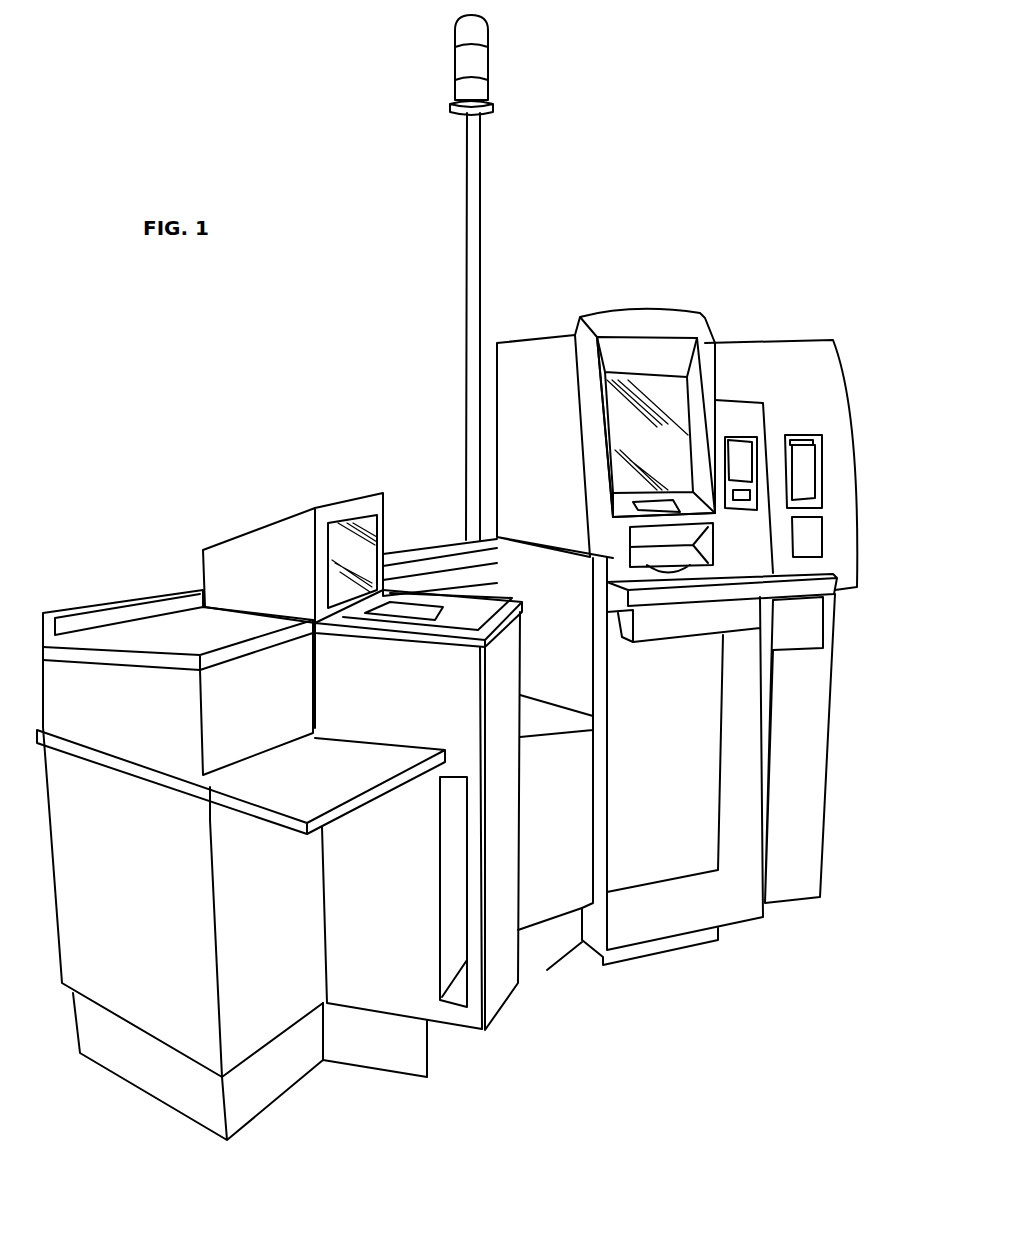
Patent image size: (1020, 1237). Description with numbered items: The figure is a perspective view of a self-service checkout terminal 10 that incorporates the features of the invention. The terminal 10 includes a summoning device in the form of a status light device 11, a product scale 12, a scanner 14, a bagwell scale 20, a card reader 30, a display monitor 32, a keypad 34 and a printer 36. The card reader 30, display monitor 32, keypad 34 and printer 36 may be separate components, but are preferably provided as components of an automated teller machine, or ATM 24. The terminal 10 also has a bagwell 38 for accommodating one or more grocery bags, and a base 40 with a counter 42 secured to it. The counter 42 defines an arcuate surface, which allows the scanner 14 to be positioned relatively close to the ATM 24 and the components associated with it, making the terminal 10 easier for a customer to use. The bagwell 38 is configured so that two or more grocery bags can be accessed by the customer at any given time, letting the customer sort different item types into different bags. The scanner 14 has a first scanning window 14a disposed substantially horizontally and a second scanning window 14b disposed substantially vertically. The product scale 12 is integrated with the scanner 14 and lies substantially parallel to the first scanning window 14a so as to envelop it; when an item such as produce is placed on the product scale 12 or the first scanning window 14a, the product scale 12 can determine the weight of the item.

The self-service checkout terminal 10 is at (730, 148).
The status light device 11 is at (490, 61).
The product scale 12 is at (440, 652).
The scanner 14 is at (336, 495).
The first scanning window 14a is at (410, 608).
The second scanning window 14b is at (337, 583).
The bagwell scale 20 is at (550, 738).
The automated teller machine (ATM) 24 is at (810, 362).
The card reader 30 is at (743, 452).
The display monitor 32 is at (627, 432).
The keypad 34 is at (632, 504).
The printer 36 is at (808, 533).
The bagwell 38 is at (563, 663).
The base 40 is at (137, 1000).
The counter 42 is at (163, 628).